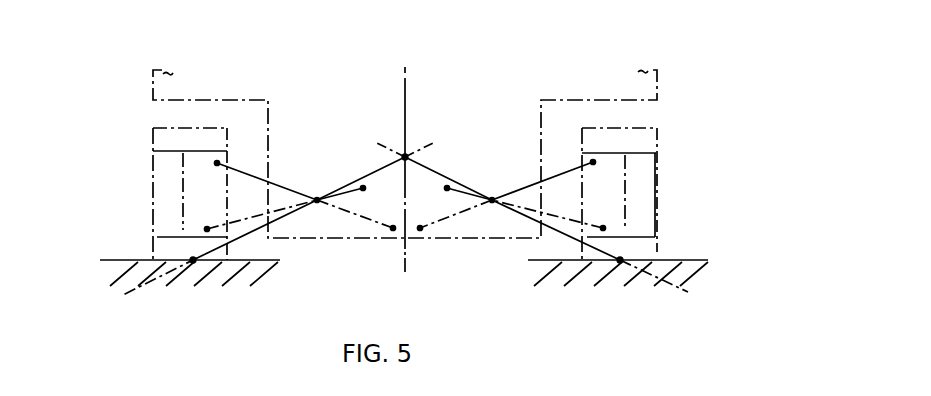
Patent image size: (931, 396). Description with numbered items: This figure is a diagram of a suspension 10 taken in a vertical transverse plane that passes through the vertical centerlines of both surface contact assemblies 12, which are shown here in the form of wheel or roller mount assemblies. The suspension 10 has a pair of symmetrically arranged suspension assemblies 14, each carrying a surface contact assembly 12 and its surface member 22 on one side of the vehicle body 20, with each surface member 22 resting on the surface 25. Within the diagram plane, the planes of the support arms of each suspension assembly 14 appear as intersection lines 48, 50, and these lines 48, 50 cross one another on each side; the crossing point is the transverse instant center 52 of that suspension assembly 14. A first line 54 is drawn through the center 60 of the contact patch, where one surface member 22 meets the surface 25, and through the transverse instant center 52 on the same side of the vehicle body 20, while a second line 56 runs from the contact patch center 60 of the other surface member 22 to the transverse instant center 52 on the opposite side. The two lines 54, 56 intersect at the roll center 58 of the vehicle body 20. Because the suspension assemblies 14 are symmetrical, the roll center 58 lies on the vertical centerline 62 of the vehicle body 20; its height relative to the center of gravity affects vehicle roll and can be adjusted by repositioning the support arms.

The suspension 10 is at (505, 79).
The surface contact assembly 12 is at (142, 207).
The suspension assembly 14 is at (298, 252).
The vehicle body 20 is at (177, 88).
The surface member 22 is at (163, 142).
The surface 25 is at (693, 260).
The support arm plane intersection line 48 is at (244, 218).
The support arm plane intersection line 50 is at (272, 183).
The transverse instant center 52 is at (318, 202).
The line 54 is at (373, 168).
The line 56 is at (433, 168).
The roll center 58 is at (403, 155).
The center of contact patch 60 is at (193, 262).
The vertical centerline 62 is at (404, 256).